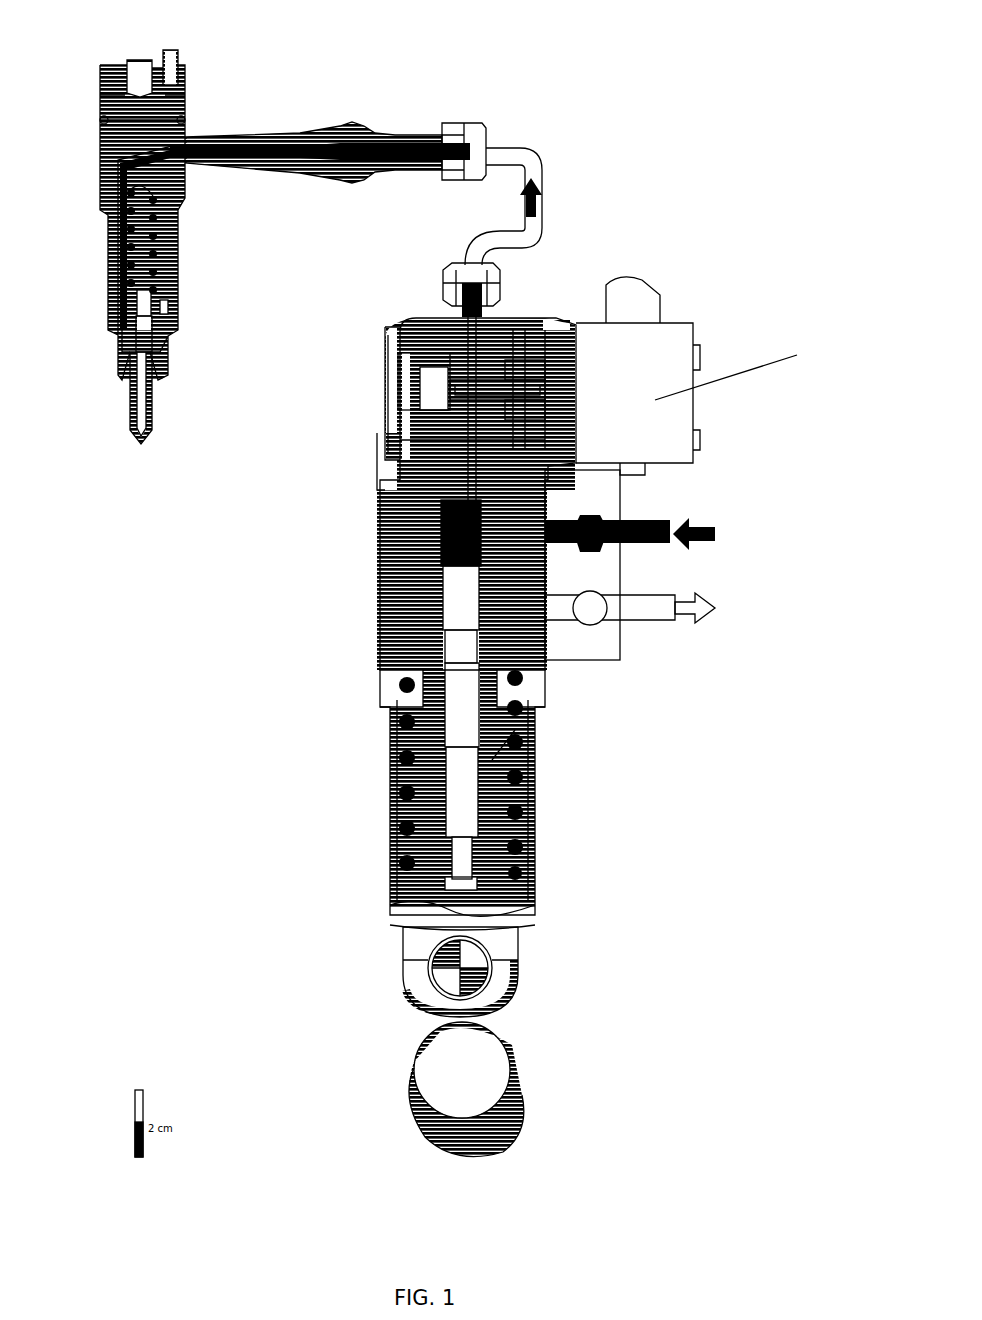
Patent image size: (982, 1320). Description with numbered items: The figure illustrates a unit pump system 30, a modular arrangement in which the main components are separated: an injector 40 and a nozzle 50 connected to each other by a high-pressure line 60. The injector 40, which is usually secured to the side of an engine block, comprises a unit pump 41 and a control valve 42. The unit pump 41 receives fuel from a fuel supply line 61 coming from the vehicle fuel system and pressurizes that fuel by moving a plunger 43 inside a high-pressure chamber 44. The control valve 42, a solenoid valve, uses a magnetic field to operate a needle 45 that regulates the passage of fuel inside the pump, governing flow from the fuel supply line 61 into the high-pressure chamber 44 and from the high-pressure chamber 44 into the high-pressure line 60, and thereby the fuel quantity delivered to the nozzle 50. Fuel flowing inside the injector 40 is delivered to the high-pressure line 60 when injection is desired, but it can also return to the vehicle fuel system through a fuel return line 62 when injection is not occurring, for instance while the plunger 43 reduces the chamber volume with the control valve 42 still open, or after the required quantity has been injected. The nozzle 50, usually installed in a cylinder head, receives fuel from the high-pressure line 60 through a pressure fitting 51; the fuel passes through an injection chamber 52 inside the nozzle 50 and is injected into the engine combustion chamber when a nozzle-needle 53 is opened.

The unit pump system 30 is at (672, 86).
The injector 40 is at (727, 268).
The unit pump 41 is at (512, 606).
The control valve 42 is at (513, 317).
The plunger 43 is at (465, 596).
The high-pressure chamber 44 is at (462, 540).
The needle 45 is at (460, 390).
The nozzle 50 is at (315, 65).
The pressure fitting 51 is at (372, 130).
The injection chamber 52 is at (128, 343).
The nozzle-needle 53 is at (145, 383).
The high-pressure line 60 is at (508, 150).
The fuel supply line 61 is at (647, 525).
The fuel return line 62 is at (648, 603).